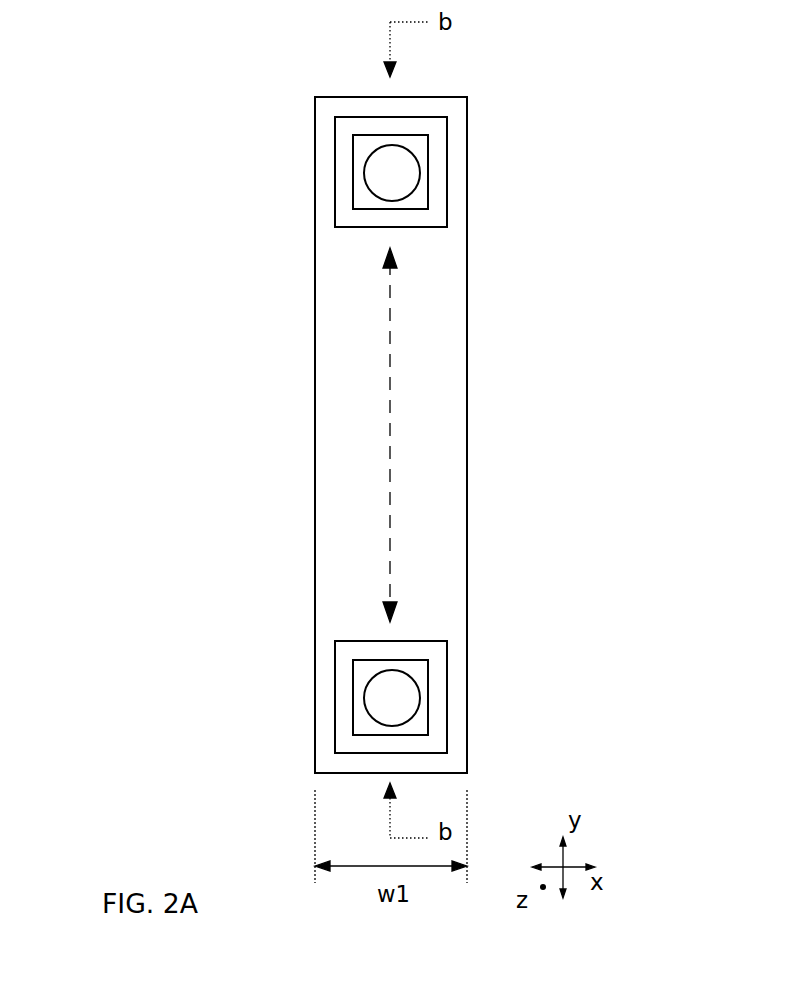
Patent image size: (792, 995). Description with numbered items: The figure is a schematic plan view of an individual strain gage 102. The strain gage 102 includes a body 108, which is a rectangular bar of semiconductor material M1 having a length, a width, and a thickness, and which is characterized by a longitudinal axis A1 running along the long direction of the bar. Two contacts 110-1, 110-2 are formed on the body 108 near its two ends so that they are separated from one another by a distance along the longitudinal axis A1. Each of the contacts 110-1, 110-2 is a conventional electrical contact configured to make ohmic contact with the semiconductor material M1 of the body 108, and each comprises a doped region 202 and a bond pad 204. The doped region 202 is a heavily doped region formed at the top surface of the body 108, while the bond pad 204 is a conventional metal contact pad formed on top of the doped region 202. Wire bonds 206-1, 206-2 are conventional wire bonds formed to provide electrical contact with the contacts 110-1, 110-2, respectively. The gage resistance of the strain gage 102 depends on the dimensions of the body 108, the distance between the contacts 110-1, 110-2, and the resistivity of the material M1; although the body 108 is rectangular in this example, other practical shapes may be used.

The strain gage 102 is at (240, 88).
The body 108 is at (315, 499).
The contact 110-1 is at (332, 632).
The contact 110-2 is at (331, 237).
The doped region 202 is at (438, 665).
The bond pad 204 is at (428, 712).
The wire bond 206-1 is at (390, 698).
The wire bond 206-2 is at (390, 175).
The semiconductor material M1 is at (362, 473).
The longitudinal axis A1 is at (392, 397).